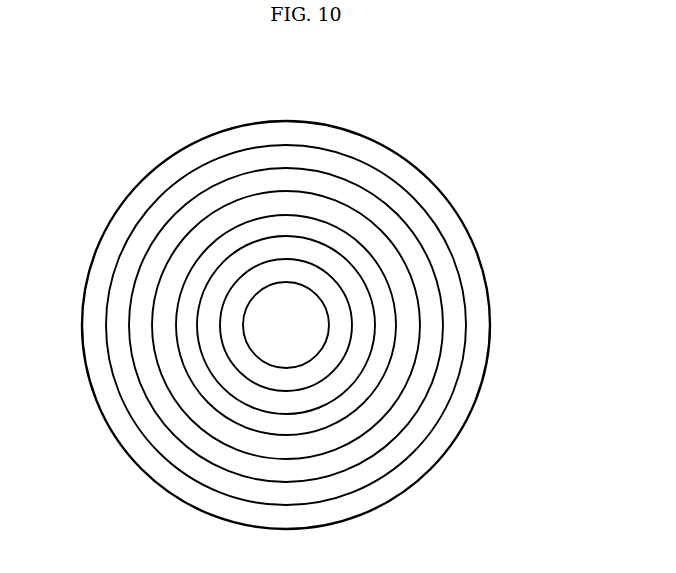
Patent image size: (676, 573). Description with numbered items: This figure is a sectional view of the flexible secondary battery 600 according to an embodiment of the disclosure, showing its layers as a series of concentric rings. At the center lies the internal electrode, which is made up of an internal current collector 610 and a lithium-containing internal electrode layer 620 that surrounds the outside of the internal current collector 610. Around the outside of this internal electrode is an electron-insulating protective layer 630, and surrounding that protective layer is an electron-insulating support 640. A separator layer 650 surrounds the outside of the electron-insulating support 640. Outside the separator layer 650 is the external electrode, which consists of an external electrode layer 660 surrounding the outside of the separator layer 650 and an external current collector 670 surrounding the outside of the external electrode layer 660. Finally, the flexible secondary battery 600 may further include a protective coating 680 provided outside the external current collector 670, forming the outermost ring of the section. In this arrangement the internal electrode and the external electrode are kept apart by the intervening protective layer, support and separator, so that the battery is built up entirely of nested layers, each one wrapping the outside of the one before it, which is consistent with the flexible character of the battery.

The flexible secondary battery 600 is at (107, 132).
The internal current collector 610 is at (305, 330).
The lithium-containing internal electrode layer 620 is at (337, 310).
The electron-insulating protective layer 630 is at (353, 288).
The electron-insulating support 640 is at (370, 263).
The separator layer 650 is at (373, 237).
The external electrode layer 660 is at (382, 203).
The external current collector 670 is at (368, 173).
The protective coating 680 is at (355, 129).